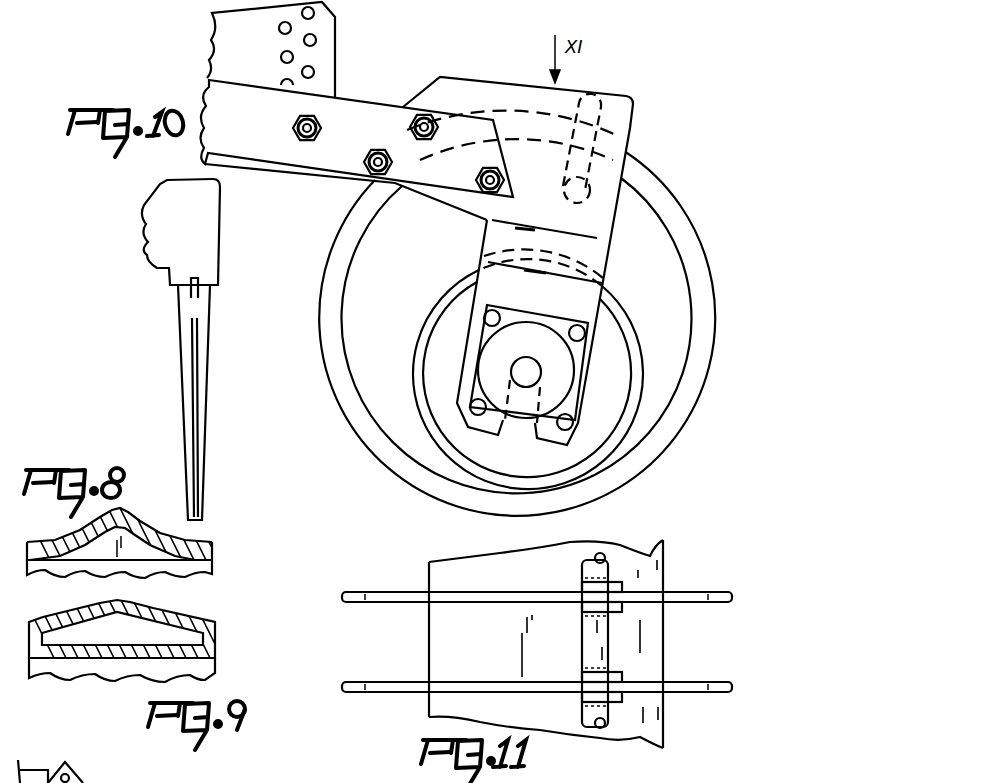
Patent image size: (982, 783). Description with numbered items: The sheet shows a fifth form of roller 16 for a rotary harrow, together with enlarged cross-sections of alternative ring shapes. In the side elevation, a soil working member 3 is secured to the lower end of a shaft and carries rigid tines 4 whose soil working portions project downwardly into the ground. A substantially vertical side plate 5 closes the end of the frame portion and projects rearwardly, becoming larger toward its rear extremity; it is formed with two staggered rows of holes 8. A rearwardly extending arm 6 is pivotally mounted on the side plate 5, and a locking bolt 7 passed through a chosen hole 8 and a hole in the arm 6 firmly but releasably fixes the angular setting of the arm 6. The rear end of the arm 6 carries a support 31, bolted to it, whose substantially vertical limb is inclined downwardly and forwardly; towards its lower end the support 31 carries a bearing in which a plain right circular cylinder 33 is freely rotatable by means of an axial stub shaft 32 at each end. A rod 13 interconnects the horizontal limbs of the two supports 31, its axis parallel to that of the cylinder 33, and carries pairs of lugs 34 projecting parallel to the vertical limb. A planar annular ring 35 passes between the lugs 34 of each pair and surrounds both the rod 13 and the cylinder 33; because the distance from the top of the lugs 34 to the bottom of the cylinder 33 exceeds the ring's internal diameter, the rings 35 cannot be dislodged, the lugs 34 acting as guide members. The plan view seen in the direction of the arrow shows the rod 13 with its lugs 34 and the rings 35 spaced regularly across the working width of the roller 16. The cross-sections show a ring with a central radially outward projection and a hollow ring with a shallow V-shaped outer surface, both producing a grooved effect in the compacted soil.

In FIG. 10, the soil working member 3 is at (231, 238).
In FIG. 10, the tine 4 is at (182, 354).
In FIG. 10, the side plate 5 is at (214, 27).
In FIG. 10, the arm 6 is at (347, 102).
In FIG. 10, the locking bolt 7 is at (293, 126).
In FIG. 10, the hole 8 is at (304, 40).
In FIG. 10, the rod 13 is at (566, 198).
In FIG. 11, the rod 13 is at (600, 728).
In FIG. 10, the roller 16 is at (322, 374).
In FIG. 11, the roller 16 is at (694, 575).
In FIG. 10, the support 31 is at (631, 130).
In FIG. 11, the support 31 is at (595, 640).
In FIG. 10, the stub shaft 32 is at (536, 342).
In FIG. 10, the cylinder 33 is at (426, 318).
In FIG. 11, the cylinder 33 is at (448, 566).
In FIG. 10, the lug 34 is at (595, 112).
In FIG. 11, the lug 34 is at (591, 572).
In FIG. 10, the annular ring 35 is at (337, 272).
In FIG. 11, the annular ring 35 is at (350, 683).